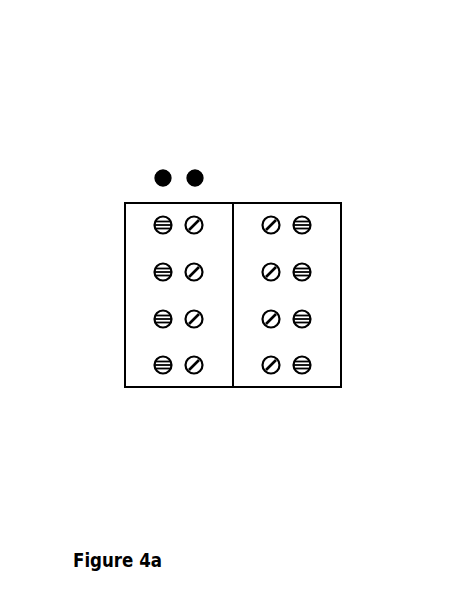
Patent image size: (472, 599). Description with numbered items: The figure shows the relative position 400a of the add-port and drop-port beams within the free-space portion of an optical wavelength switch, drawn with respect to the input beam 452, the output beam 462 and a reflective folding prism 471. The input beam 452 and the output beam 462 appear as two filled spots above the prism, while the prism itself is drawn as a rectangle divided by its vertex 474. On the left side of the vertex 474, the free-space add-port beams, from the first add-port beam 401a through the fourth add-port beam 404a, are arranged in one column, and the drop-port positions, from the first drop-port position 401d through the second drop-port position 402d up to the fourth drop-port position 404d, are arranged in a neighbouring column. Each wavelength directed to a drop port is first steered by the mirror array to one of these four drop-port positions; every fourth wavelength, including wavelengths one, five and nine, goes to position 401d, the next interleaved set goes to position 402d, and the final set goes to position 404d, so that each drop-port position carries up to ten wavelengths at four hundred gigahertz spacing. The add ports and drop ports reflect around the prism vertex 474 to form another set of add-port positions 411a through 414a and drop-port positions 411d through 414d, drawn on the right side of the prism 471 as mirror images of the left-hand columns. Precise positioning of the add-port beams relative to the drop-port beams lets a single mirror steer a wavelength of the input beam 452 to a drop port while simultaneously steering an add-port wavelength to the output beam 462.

The relative position of add-port and drop-port beams 400a is at (327, 75).
The folding prism 471 is at (344, 197).
The prism vertex 474 is at (238, 200).
The input beam 452 is at (157, 167).
The output beam 462 is at (205, 167).
The add-port beam 404a is at (152, 220).
The drop-port position 404d is at (183, 235).
The drop-port position 402d is at (183, 327).
The add-port beam 401a is at (153, 376).
The drop-port position 401d is at (194, 377).
The drop-port position 411d is at (271, 377).
The add-port position 411a is at (308, 373).
The add-port position 414a is at (315, 221).
The drop-port position 414d is at (283, 235).